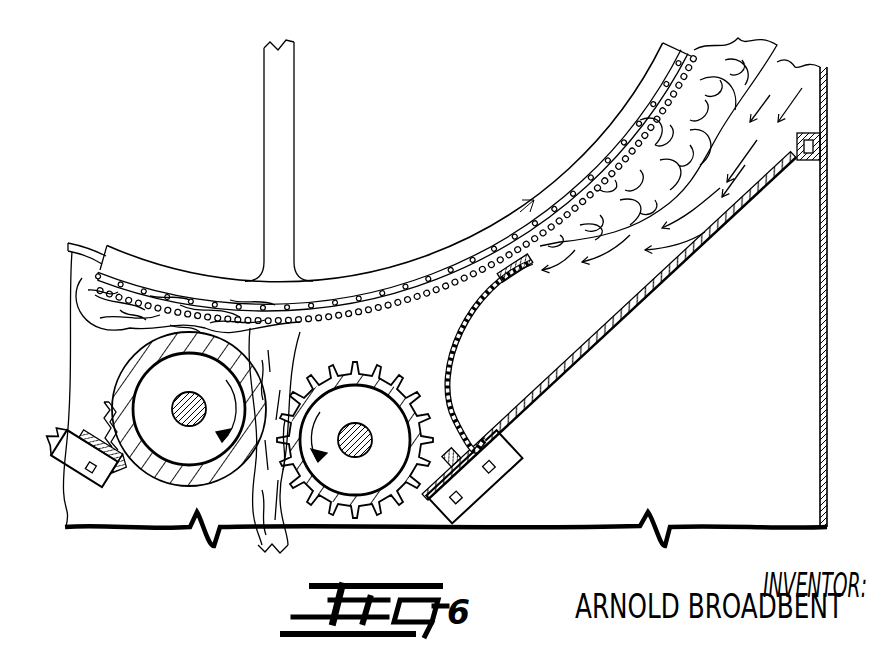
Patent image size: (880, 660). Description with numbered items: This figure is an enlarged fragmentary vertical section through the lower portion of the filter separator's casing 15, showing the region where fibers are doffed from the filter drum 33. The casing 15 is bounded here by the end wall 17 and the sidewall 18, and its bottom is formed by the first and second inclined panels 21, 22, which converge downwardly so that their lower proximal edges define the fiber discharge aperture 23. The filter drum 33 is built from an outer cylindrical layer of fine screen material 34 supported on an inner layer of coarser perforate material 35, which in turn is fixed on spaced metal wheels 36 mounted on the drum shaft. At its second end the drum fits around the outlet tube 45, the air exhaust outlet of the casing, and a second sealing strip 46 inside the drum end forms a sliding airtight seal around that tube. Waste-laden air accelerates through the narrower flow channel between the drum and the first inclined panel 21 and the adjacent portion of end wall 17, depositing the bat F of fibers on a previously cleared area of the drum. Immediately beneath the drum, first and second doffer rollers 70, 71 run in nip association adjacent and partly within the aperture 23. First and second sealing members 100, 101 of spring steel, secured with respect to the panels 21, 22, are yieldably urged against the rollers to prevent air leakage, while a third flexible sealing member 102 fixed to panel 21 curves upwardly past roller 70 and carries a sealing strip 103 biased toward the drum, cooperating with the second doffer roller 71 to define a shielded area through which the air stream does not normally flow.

The casing 15 is at (830, 183).
The end wall 17 is at (820, 289).
The sidewall 18 is at (733, 450).
The first inclined panel 21 is at (560, 372).
The second inclined panel 22 is at (62, 445).
The fiber discharge aperture 23 is at (305, 512).
The filter drum 33 is at (591, 138).
The screen material 34 is at (442, 299).
The perforate material 35 is at (441, 296).
The wheels 36 is at (294, 140).
The outlet tube 45 is at (80, 242).
The second sealing strip 46 is at (80, 262).
The first doffer roller 70 is at (374, 335).
The second doffer roller 71 is at (180, 478).
The first sealing member 100 is at (462, 440).
The second sealing member 101 is at (107, 408).
The third flexible sealing member 102 is at (458, 326).
The sealing strip 103 is at (508, 280).
The bat F is at (82, 303).